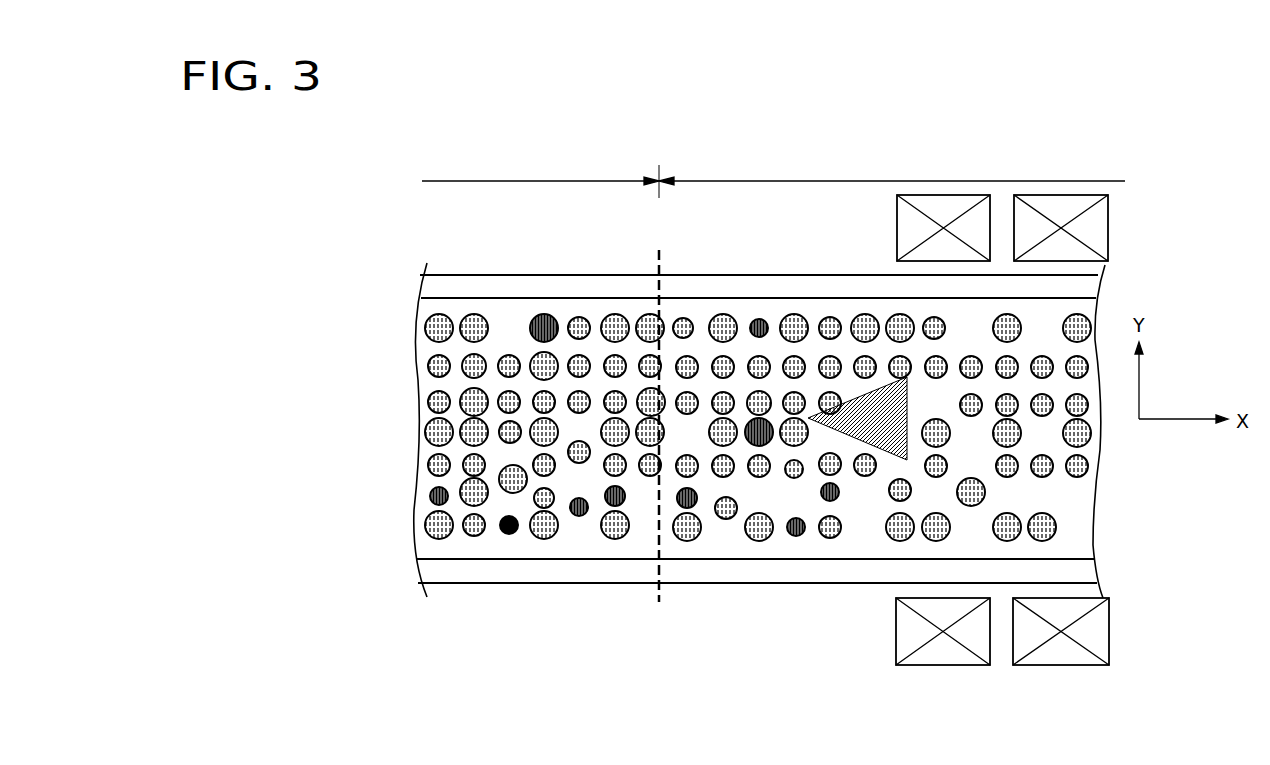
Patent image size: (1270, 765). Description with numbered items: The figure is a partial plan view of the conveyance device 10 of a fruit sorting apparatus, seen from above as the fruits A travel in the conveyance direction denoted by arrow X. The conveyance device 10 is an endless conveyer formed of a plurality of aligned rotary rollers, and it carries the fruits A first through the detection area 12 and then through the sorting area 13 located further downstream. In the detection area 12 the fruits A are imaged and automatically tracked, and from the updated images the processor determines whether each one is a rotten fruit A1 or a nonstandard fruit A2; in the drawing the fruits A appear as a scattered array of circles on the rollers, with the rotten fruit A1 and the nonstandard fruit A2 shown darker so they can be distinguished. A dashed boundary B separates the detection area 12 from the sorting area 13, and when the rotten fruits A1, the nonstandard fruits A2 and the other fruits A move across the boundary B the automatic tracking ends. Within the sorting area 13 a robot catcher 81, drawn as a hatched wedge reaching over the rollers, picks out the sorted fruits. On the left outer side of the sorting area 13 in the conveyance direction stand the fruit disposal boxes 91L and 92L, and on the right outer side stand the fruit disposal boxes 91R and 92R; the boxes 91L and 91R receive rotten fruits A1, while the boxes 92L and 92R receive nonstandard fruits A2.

The conveyance device 10 is at (525, 548).
The detection area 12 is at (540, 173).
The sorting area 13 is at (892, 167).
The catcher 81 is at (865, 400).
The fruit disposal box 91L is at (895, 237).
The fruit disposal box 92L is at (1108, 237).
The fruit disposal box 91R is at (893, 640).
The fruit disposal box 92R is at (1110, 640).
The fruits A is at (472, 314).
The rotten fruit A1 is at (540, 314).
The nonstandard fruit A2 is at (430, 497).
The boundary B is at (660, 412).